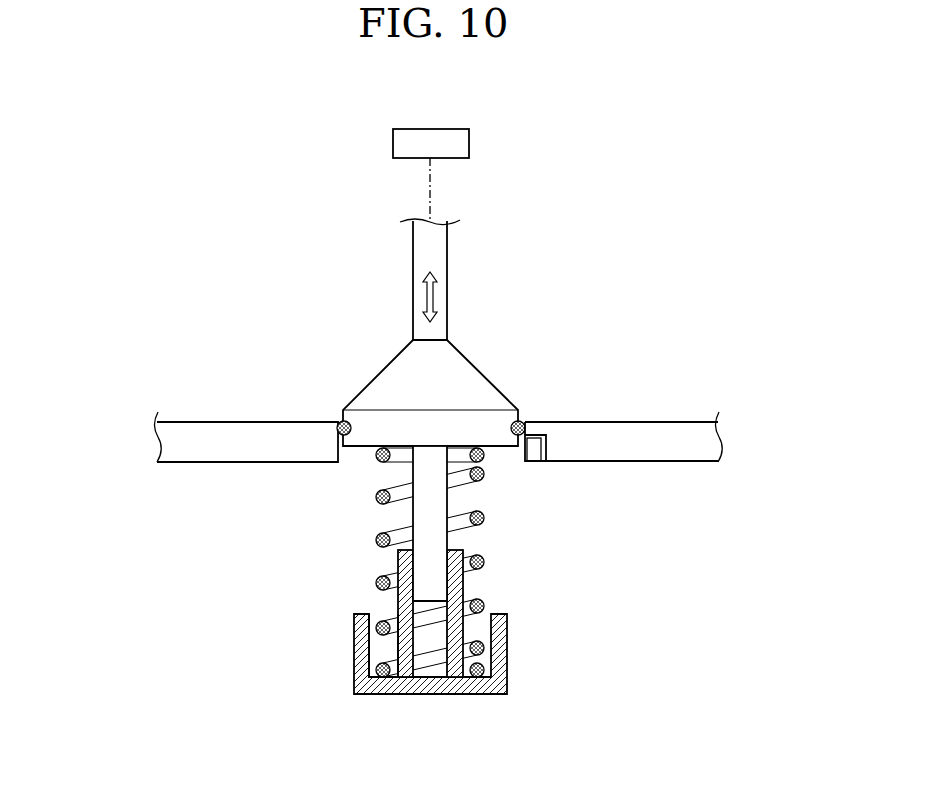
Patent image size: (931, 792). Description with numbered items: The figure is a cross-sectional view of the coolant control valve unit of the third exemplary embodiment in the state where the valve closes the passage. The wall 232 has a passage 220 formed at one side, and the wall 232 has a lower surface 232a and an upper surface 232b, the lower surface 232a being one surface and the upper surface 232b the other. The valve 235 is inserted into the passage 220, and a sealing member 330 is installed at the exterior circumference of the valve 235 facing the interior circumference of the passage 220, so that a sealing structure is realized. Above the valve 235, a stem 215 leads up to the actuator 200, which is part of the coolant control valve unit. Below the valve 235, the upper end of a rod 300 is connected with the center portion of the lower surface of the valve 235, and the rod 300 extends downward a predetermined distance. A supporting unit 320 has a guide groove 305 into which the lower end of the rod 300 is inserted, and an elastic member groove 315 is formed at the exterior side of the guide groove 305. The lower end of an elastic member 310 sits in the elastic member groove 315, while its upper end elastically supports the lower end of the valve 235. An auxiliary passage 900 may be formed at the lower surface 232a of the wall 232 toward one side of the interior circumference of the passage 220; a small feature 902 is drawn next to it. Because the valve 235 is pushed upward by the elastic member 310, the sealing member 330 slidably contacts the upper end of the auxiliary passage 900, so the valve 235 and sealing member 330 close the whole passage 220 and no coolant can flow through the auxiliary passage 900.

The actuator 200 is at (392, 143).
The stem 215 is at (412, 277).
The valve 235 is at (388, 385).
The passage 220 is at (340, 462).
The sealing member 330 is at (340, 423).
The wall 232 is at (563, 461).
The lower surface 232a is at (613, 461).
The upper surface 232b is at (614, 422).
The auxiliary passage 900 is at (546, 447).
The stopper protrusion 902 is at (531, 436).
The rod 300 is at (428, 566).
The guide groove 305 is at (440, 630).
The elastic member 310 is at (485, 562).
The elastic member groove 315 is at (385, 648).
The supporting unit 320 is at (430, 694).